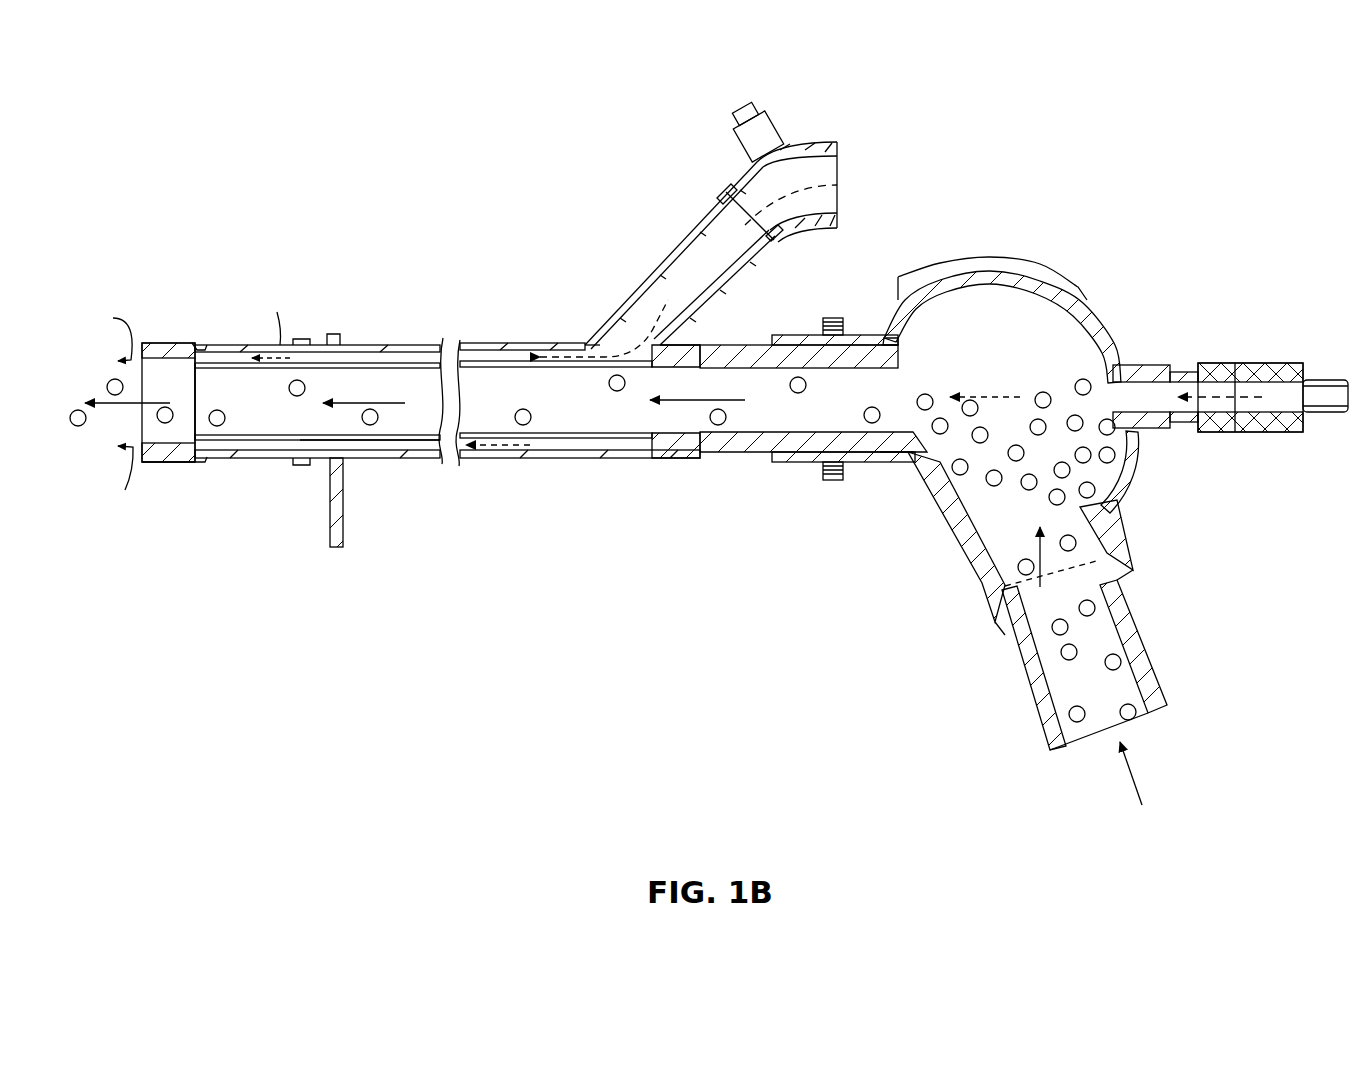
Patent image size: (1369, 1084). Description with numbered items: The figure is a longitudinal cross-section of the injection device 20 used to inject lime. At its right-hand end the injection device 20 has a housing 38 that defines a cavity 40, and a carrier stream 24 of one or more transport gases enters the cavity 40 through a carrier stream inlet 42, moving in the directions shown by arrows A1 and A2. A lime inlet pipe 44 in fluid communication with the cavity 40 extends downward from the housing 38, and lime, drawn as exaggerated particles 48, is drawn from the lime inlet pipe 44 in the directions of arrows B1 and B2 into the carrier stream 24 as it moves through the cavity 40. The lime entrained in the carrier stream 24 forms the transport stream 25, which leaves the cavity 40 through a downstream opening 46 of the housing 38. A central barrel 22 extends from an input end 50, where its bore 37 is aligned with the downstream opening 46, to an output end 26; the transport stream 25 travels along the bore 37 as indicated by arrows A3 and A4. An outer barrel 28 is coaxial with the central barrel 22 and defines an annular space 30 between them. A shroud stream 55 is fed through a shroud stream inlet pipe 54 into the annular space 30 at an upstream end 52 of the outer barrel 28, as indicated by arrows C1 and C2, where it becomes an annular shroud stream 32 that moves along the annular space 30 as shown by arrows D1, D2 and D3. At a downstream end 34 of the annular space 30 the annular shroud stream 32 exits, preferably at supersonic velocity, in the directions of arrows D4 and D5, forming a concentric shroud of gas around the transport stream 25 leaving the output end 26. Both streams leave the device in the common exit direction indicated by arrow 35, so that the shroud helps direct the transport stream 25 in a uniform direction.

The injection device 20 is at (1036, 217).
The central barrel 22 is at (735, 468).
The carrier stream 24 is at (1165, 388).
The transport stream 25 is at (400, 440).
The output end 26 is at (184, 462).
The outer barrel 28 is at (413, 345).
The annular space 30 is at (497, 343).
The annular shroud stream 32 is at (360, 360).
The downstream end 34 is at (186, 345).
The arrow 35 is at (107, 408).
The bore 37 is at (597, 450).
The housing 38 is at (1090, 302).
The cavity 40 is at (1023, 342).
The carrier stream inlet 42 is at (1260, 432).
The lime inlet pipe 44 is at (1135, 599).
The downstream opening 46 is at (896, 415).
The particles 48 is at (525, 428).
The input end 50 is at (878, 344).
The upstream end 52 is at (585, 343).
The shroud stream inlet pipe 54 is at (698, 224).
The shroud stream 55 is at (718, 258).
The arrow A1 is at (1255, 362).
The arrow A2 is at (974, 398).
The arrow A3 is at (745, 400).
The arrow A4 is at (337, 402).
The arrow B1 is at (1136, 778).
The arrow B2 is at (1060, 576).
The arrow C1 is at (836, 187).
The arrow C2 is at (613, 321).
The arrow D1 is at (486, 460).
The arrow D2 is at (355, 460).
The arrow D3 is at (267, 321).
The arrow D4 is at (103, 329).
The arrow D5 is at (119, 490).